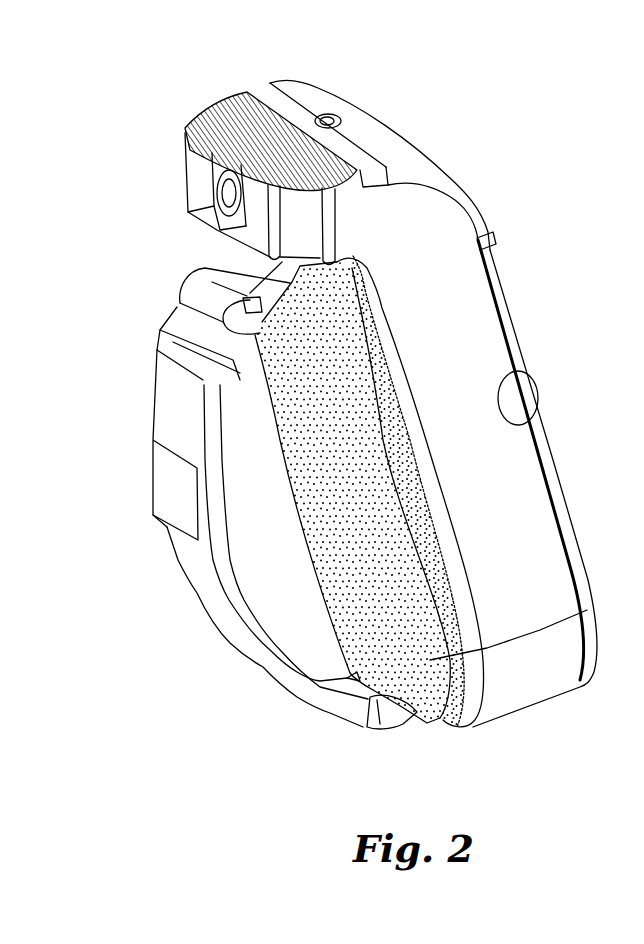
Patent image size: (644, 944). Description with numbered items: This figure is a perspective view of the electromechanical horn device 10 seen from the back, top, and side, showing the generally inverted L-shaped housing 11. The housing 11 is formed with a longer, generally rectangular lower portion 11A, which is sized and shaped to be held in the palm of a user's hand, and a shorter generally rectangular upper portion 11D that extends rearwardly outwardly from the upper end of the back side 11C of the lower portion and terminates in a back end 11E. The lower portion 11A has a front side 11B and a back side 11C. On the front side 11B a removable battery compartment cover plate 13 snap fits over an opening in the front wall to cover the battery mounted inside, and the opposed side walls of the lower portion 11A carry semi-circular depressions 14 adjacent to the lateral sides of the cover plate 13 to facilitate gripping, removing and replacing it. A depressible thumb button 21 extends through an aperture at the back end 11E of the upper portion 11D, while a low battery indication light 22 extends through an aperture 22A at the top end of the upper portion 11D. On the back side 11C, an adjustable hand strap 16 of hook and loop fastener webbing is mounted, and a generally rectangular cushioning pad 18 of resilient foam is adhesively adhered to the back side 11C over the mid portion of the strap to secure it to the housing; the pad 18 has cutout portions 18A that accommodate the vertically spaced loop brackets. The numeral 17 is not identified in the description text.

The electromechanical horn device 10 is at (470, 122).
The housing 11 is at (508, 473).
The lower portion 11A is at (528, 576).
The front side 11B is at (573, 537).
The back side 11C is at (450, 598).
The upper portion 11D is at (373, 207).
The back end 11E is at (185, 157).
The battery compartment cover plate 13 is at (517, 330).
The semi-circular depressions 14 is at (513, 393).
The hand strap 16 is at (207, 590).
The clasp 17 is at (173, 323).
The cushioning pad 18 is at (343, 455).
The cutout portions 18A is at (357, 735).
The thumb button 21 is at (215, 197).
The low battery indication light 22 is at (333, 122).
The aperture 22A is at (352, 123).